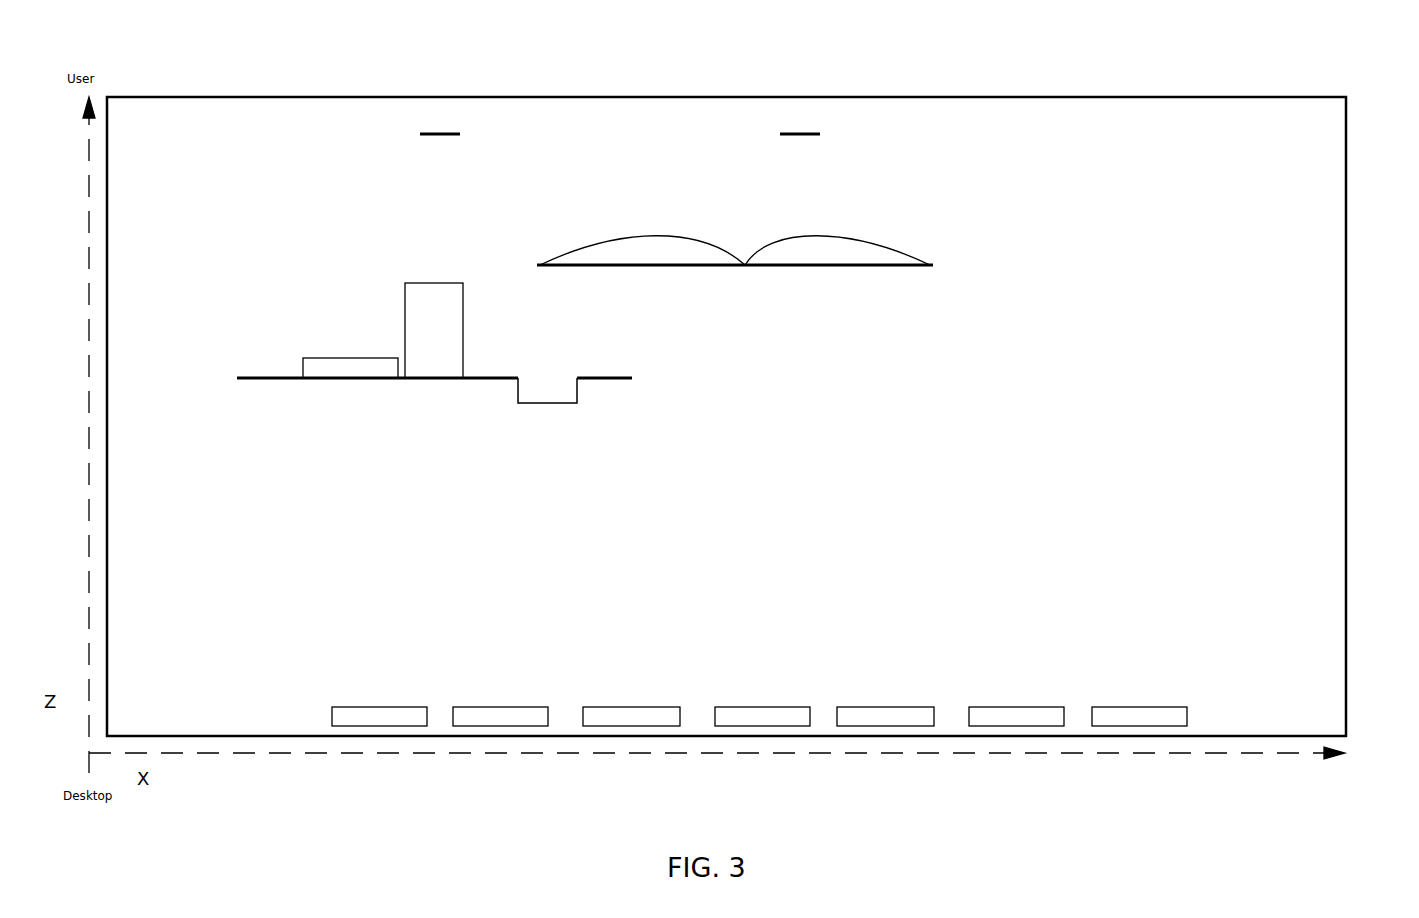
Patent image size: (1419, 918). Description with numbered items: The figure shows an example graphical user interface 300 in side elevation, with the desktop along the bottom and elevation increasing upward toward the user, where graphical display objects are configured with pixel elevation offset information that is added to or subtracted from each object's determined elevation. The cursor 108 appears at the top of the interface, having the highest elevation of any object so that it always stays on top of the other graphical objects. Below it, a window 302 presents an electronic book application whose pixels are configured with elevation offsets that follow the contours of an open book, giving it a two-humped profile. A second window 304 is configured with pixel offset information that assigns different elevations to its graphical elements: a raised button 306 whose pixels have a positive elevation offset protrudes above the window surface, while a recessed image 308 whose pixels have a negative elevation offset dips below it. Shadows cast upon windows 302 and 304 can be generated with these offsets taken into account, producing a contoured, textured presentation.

The cursor 108 is at (440, 134).
The graphical user interface 300 is at (1346, 155).
The window 302 is at (800, 265).
The window 304 is at (617, 378).
The raised button 306 is at (350, 370).
The recessed image 308 is at (543, 405).